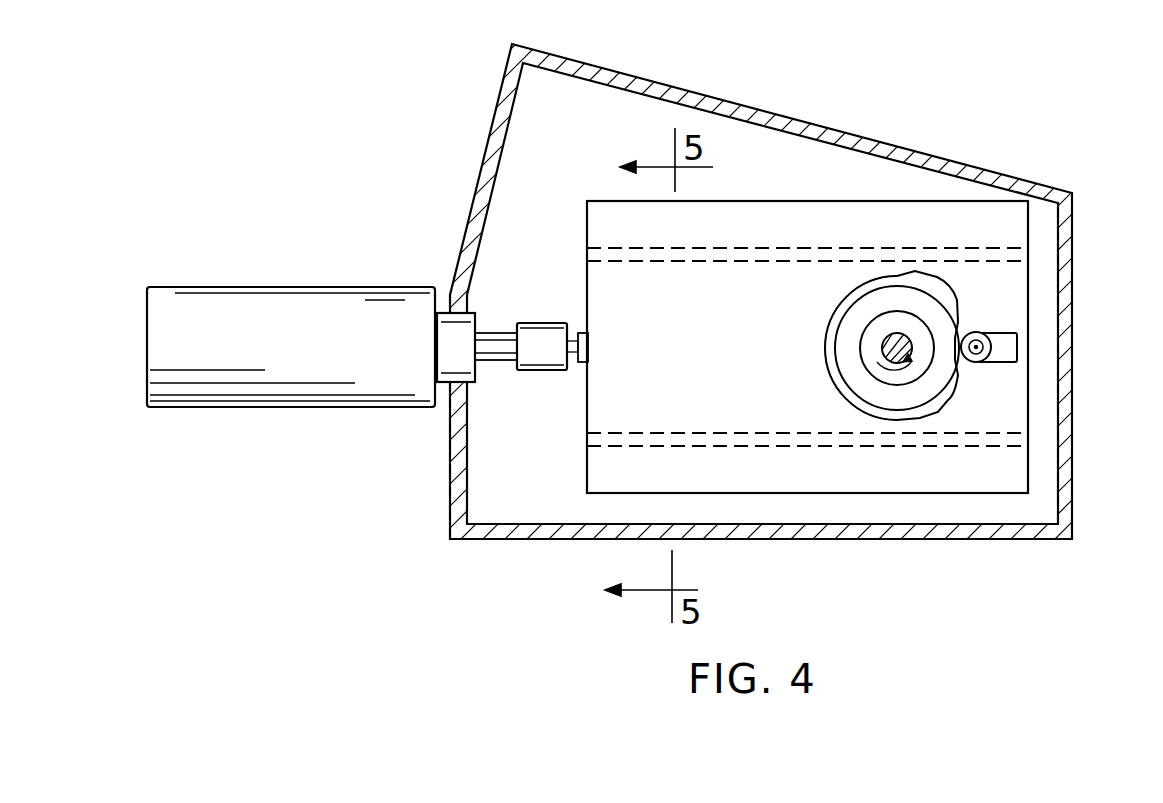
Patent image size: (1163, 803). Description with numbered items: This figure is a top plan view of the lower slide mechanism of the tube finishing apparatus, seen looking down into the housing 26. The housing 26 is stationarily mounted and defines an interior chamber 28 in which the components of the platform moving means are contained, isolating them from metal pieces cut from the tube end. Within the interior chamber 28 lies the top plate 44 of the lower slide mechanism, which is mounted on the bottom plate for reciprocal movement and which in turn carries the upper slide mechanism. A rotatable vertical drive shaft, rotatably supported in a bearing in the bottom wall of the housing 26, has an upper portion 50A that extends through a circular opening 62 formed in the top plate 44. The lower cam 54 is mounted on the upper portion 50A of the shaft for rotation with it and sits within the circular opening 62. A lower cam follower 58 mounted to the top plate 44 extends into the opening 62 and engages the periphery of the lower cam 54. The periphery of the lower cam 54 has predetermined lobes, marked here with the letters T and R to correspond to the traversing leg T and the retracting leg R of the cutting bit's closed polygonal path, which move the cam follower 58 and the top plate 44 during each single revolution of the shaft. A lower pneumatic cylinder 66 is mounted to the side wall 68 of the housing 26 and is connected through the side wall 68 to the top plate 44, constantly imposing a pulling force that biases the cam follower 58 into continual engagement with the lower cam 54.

The housing 26 is at (544, 540).
The interior chamber 28 is at (556, 242).
The top plate 44 is at (810, 472).
The upper portion of the drive shaft 50A is at (880, 346).
The lower cam 54 is at (852, 374).
The lower cam follower 58 is at (978, 332).
The circular opening 62 is at (893, 413).
The lower pneumatic cylinder 66 is at (228, 287).
The side wall 68 is at (452, 478).
The retracting leg R is at (949, 278).
The traversing leg T is at (950, 404).